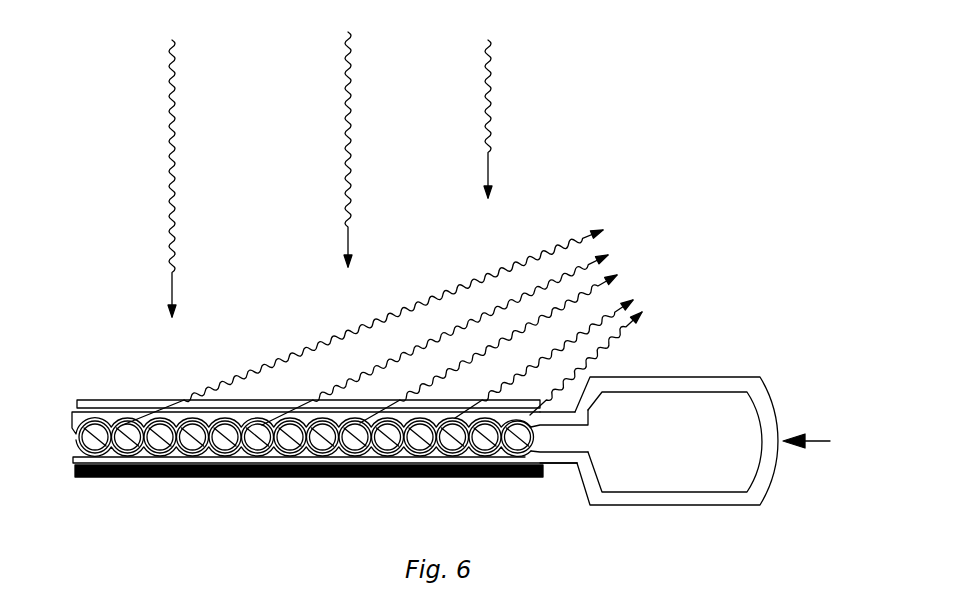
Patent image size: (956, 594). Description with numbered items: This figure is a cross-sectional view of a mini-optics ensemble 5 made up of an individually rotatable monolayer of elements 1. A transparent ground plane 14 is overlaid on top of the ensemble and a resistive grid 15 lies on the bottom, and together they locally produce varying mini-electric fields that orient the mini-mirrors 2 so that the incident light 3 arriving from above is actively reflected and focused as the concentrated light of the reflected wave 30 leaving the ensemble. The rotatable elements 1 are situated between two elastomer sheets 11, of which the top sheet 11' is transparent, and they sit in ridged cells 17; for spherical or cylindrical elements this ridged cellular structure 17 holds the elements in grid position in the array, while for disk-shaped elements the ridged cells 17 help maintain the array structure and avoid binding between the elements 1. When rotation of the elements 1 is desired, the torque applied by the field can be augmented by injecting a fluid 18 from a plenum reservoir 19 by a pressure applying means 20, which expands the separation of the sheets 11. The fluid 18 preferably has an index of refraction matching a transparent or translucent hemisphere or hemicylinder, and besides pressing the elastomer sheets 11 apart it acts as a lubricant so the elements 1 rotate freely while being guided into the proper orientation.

The rotatable element 1 is at (34, 445).
The mini-mirror 2 is at (108, 428).
The incident light 3 is at (170, 162).
The mini-optics ensemble 5 is at (124, 499).
The elastomer sheet 11 is at (581, 457).
The top elastomer sheet 11' is at (584, 417).
The transparent ground plane 14 is at (420, 400).
The resistive grid 15 is at (473, 478).
The ridged cell 17 is at (402, 455).
The fluid 18 is at (658, 468).
The plenum reservoir 19 is at (657, 408).
The pressure applying means 20 is at (826, 442).
The reflected wave 30 is at (404, 345).